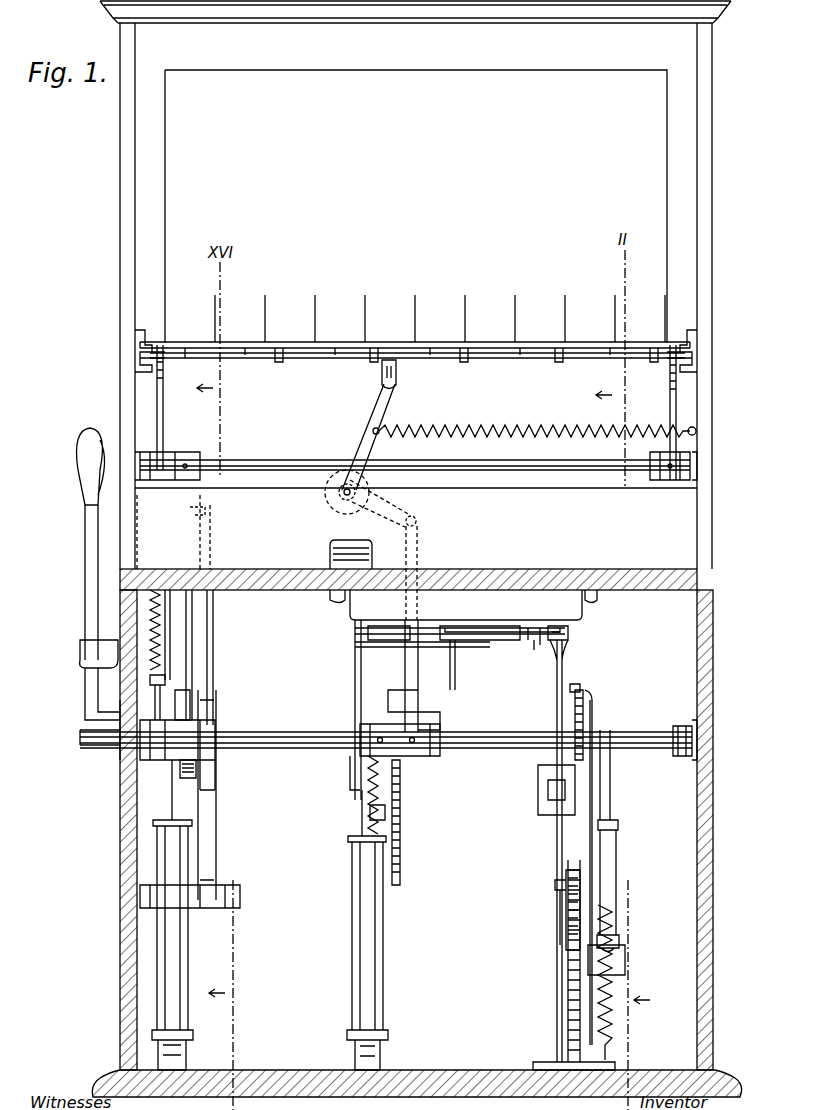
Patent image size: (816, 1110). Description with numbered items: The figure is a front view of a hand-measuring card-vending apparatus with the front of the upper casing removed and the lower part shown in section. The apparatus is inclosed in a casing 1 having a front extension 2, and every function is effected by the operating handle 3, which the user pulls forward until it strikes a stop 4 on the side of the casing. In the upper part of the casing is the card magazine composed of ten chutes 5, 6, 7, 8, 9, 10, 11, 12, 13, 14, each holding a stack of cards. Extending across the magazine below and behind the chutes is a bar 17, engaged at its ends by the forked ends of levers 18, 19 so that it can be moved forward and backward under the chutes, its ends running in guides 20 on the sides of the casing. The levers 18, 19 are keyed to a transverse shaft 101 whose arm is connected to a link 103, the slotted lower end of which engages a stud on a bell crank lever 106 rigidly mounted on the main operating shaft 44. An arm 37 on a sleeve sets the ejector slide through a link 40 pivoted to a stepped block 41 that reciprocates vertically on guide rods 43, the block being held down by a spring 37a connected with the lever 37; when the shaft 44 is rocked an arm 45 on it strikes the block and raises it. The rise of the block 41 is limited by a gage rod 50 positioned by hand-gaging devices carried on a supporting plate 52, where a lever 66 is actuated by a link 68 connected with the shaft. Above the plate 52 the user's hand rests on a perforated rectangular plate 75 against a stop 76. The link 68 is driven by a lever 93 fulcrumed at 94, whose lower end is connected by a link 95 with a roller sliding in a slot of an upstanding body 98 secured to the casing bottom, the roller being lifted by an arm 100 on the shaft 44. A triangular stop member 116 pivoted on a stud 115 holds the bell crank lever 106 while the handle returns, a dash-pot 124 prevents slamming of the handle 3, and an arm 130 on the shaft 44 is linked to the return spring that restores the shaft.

The casing 1 is at (121, 345).
The front extension 2 is at (120, 826).
The operating handle 3 is at (85, 545).
The stop 4 is at (80, 652).
The chute 5 is at (650, 318).
The chute 6 is at (597, 318).
The chute 7 is at (548, 318).
The chute 8 is at (497, 318).
The chute 9 is at (447, 318).
The chute 10 is at (394, 318).
The chute 11 is at (345, 318).
The chute 12 is at (294, 318).
The chute 13 is at (245, 318).
The chute 14 is at (193, 318).
The ejector-actuating bar 17 is at (424, 352).
The lever 18 is at (163, 408).
The lever 19 is at (670, 403).
The guides 20 is at (148, 342).
The arm 37 is at (372, 404).
The spring 37a is at (518, 430).
The link 40 is at (405, 664).
The block 41 is at (434, 716).
The guide rods 43 is at (355, 650).
The main operating shaft 44 is at (290, 720).
The arm 45 is at (400, 852).
The gage rod 50 is at (455, 668).
The supporting plate 52 is at (463, 605).
The lever 66 is at (528, 640).
The link 68 is at (568, 636).
The rectangular plate 75 is at (484, 566).
The stop 76 is at (338, 553).
The lever 93 is at (562, 662).
The fulcrum 94 is at (548, 792).
The link 95 is at (560, 912).
The upstanding body 98 is at (568, 990).
The arm 100 is at (586, 692).
The transverse shaft 101 is at (302, 460).
The link 103 is at (213, 660).
The bell crank lever 106 is at (212, 798).
The stud 115 is at (196, 908).
The stop member 116 is at (208, 822).
The dash-pot 124 is at (182, 990).
The arm 130 is at (610, 797).